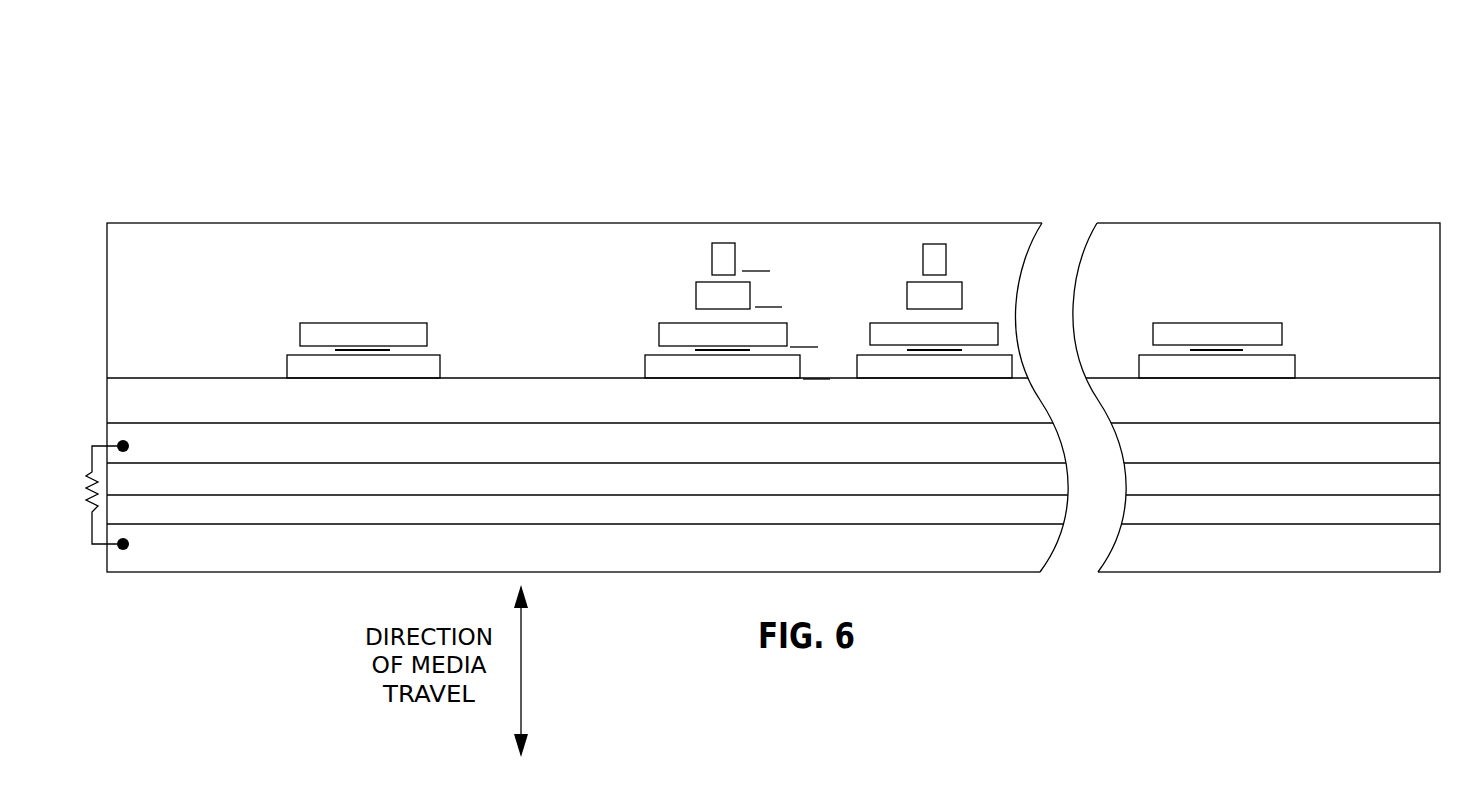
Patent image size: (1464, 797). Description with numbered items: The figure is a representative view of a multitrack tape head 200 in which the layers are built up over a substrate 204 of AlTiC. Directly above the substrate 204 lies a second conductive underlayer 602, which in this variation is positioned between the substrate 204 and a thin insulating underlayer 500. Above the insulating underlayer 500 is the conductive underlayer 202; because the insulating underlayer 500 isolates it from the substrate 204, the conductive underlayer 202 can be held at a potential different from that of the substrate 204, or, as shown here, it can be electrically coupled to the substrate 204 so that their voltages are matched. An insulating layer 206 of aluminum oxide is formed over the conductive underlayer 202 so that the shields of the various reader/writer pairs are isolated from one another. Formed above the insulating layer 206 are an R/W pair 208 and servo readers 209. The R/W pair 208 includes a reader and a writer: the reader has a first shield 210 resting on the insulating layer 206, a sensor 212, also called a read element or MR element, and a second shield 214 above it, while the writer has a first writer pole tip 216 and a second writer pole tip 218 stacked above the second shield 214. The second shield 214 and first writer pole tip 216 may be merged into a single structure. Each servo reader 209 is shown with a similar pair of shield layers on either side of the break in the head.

The tape head 200 is at (142, 172).
The conductive underlayer 202 is at (308, 457).
The substrate 204 is at (308, 556).
The insulating layer 206 is at (308, 409).
The R/W pair 208 is at (856, 231).
The servo reader 209 is at (428, 245).
The first shield 210 is at (645, 365).
The sensor 212 is at (720, 350).
The second shield 214 is at (659, 337).
The first writer pole tip 216 is at (696, 298).
The second writer pole tip 218 is at (712, 263).
The thin insulating underlayer 500 is at (308, 492).
The second conductive underlayer 602 is at (308, 521).